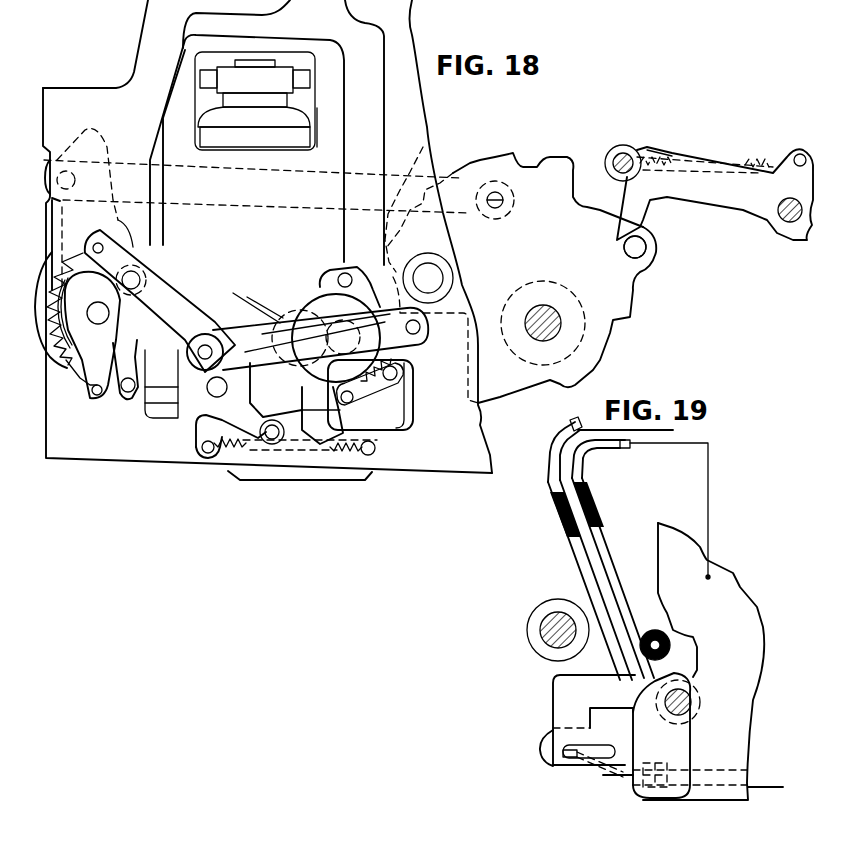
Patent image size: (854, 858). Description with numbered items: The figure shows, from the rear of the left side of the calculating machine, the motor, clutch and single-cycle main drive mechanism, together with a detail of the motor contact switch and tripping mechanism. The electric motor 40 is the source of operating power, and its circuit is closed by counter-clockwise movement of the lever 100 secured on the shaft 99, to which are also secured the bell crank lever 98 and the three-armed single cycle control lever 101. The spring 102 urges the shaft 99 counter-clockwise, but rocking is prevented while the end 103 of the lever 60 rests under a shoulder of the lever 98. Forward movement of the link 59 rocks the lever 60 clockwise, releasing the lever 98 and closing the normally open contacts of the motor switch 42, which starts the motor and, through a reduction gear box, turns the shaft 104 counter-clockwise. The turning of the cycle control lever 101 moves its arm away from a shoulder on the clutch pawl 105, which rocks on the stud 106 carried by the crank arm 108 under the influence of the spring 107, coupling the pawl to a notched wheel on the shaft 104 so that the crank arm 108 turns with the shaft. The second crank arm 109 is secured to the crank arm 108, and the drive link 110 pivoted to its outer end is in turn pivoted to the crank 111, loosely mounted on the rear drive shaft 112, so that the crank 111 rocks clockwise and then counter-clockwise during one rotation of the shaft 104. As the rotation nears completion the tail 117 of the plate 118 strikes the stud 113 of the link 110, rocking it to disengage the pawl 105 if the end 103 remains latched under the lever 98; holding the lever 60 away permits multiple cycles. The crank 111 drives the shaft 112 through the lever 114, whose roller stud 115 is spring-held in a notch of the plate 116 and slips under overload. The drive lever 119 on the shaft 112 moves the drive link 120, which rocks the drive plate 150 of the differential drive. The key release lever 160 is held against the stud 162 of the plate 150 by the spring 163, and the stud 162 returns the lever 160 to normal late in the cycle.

In FIG. 18, the electric motor 40 is at (302, 138).
In FIG. 19, the motor switch 42 is at (565, 525).
In FIG. 19, the link 59 is at (773, 790).
In FIG. 19, the lever 60 is at (620, 780).
In FIG. 19, the bell crank lever 98 is at (562, 693).
In FIG. 18, the shaft 99 is at (218, 392).
In FIG. 19, the shaft 99 is at (700, 702).
In FIG. 19, the lever 100 is at (670, 662).
In FIG. 18, the three-armed single cycle control lever 101 is at (200, 427).
In FIG. 18, the spring 102 is at (360, 456).
In FIG. 19, the end of lever 60 103 is at (577, 765).
In FIG. 18, the shaft 104 is at (413, 400).
In FIG. 18, the clutch pawl 105 is at (258, 287).
In FIG. 18, the stud 106 is at (297, 297).
In FIG. 18, the spring 107 is at (402, 363).
In FIG. 18, the crank arm 108 is at (330, 307).
In FIG. 18, the second crank arm 109 is at (368, 277).
In FIG. 18, the drive link 110 is at (233, 333).
In FIG. 18, the crank 111 is at (103, 420).
In FIG. 18, the rear drive shaft 112 is at (98, 320).
In FIG. 18, the stud 113 is at (271, 440).
In FIG. 18, the lever 114 is at (167, 287).
In FIG. 18, the roller stud 115 is at (120, 233).
In FIG. 18, the plate 116 is at (48, 390).
In FIG. 18, the tail 117 is at (322, 433).
In FIG. 18, the plate 118 is at (302, 383).
In FIG. 18, the drive lever 119 is at (97, 127).
In FIG. 18, the drive link 120 is at (430, 143).
In FIG. 18, the drive plate 150 is at (603, 283).
In FIG. 18, the key release lever 160 is at (728, 197).
In FIG. 18, the stud 162 is at (635, 245).
In FIG. 18, the spring 163 is at (767, 157).